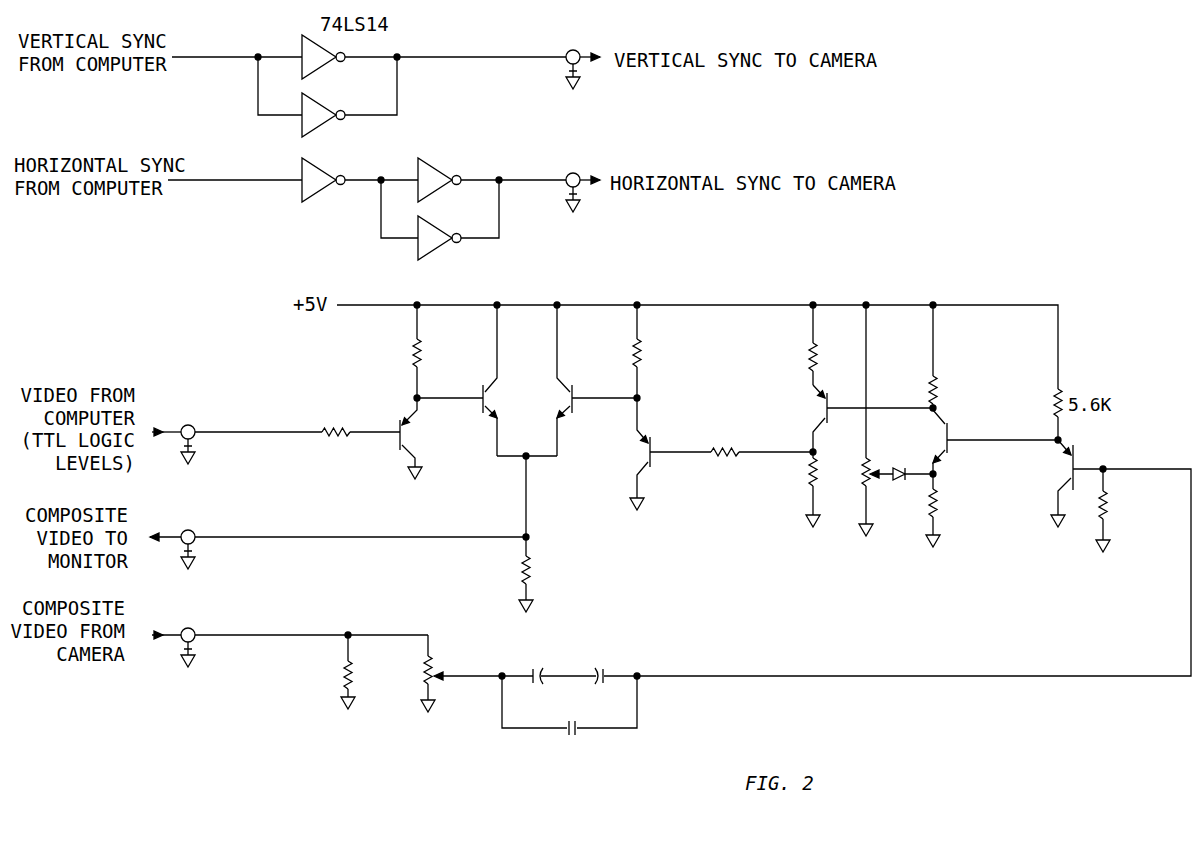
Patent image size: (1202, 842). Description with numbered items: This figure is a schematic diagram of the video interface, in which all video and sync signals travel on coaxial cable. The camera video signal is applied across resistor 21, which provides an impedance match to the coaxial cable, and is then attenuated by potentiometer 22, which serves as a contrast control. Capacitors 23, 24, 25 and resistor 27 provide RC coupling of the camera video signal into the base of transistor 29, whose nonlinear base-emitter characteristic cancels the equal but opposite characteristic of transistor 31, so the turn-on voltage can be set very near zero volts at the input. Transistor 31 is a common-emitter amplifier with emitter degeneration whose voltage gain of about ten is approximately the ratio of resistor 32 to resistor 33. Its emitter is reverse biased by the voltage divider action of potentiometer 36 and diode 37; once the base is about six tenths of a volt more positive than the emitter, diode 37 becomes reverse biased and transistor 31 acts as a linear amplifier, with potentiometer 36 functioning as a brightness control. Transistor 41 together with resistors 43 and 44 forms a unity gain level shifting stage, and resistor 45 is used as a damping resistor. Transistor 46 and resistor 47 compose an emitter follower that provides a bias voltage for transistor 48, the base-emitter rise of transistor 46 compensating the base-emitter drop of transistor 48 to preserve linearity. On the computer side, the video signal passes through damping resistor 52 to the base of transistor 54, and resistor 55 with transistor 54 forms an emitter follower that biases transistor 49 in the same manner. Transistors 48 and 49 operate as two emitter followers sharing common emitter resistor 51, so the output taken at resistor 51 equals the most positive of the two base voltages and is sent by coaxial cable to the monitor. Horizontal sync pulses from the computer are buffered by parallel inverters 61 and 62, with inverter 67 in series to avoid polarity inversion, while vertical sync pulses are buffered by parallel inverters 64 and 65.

The inverter 64 is at (299, 43).
The inverter 65 is at (299, 128).
The inverter 67 is at (295, 165).
The inverter 61 is at (416, 165).
The inverter 62 is at (416, 260).
The resistor 55 is at (411, 354).
The resistor 52 is at (337, 440).
The transistor 54 is at (398, 446).
The transistor 49 is at (482, 405).
The transistor 48 is at (571, 392).
The common emitter resistor 51 is at (520, 568).
The resistor 47 is at (634, 353).
The transistor 46 is at (652, 443).
The damping resistor 45 is at (722, 462).
The resistor 43 is at (813, 344).
The transistor 41 is at (828, 405).
The resistor 44 is at (814, 462).
The potentiometer 36 is at (866, 470).
The diode 37 is at (904, 472).
The resistor 32 is at (932, 378).
The transistor 31 is at (950, 424).
The resistor 33 is at (931, 514).
The transistor 29 is at (1073, 456).
The resistor 27 is at (1104, 529).
The potentiometer 22 is at (432, 666).
The resistor 21 is at (353, 680).
The capacitor 23 is at (533, 690).
The capacitor 24 is at (598, 684).
The capacitor 25 is at (573, 724).